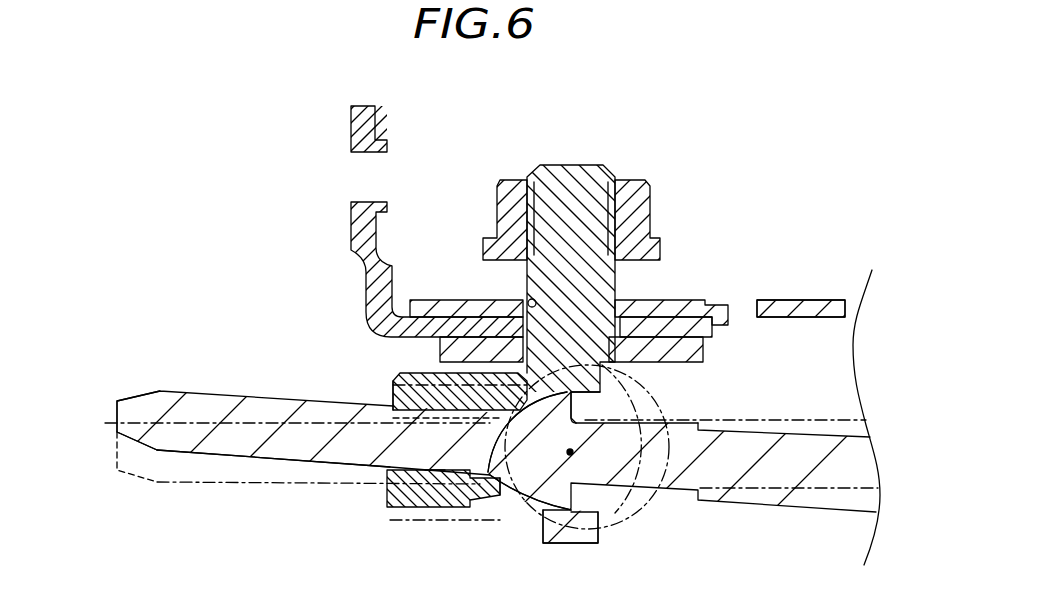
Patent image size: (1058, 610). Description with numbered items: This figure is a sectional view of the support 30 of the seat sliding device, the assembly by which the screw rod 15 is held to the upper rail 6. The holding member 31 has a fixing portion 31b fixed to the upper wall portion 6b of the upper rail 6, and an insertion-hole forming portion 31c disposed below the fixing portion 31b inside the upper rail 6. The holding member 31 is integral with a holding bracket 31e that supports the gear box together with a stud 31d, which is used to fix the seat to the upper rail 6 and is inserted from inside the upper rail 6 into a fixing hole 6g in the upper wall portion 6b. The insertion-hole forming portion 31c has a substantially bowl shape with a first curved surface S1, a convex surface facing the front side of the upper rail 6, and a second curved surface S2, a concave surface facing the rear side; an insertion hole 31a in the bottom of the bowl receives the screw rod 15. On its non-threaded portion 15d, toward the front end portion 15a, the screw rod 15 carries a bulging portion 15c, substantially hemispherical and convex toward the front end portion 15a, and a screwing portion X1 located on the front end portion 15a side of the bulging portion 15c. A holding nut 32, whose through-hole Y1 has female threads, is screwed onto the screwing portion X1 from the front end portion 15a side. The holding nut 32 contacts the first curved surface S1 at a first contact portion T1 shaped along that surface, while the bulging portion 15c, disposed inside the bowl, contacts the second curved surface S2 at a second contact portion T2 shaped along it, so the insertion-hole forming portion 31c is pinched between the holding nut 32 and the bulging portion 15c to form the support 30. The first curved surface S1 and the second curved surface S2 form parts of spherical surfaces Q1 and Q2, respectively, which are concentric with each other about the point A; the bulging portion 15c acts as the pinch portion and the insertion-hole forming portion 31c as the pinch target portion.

The support 30 is at (762, 152).
The holding member 31 is at (562, 163).
The insertion hole 31a is at (520, 366).
The fixing portion 31b is at (690, 345).
The insertion-hole forming portion 31c is at (576, 540).
The stud 31d is at (586, 200).
The holding bracket 31e is at (375, 292).
The holding nut 32 is at (390, 506).
The upper rail 6 is at (790, 300).
The upper wall portion 6b is at (801, 308).
The fixing hole 6g is at (527, 302).
The screw rod 15 is at (788, 508).
The front end portion 15a is at (118, 421).
The non-threaded portion 15d is at (352, 462).
The bulging portion 15c is at (555, 500).
The point A is at (573, 452).
The spherical surface Q1 is at (666, 505).
The spherical surface Q2 is at (618, 516).
The screwing portion X1 is at (393, 392).
The through-hole Y1 is at (430, 455).
The first contact portion T1 is at (490, 487).
The second contact portion T2 is at (620, 418).
The first curved surface S1 is at (505, 520).
The second curved surface S2 is at (545, 500).